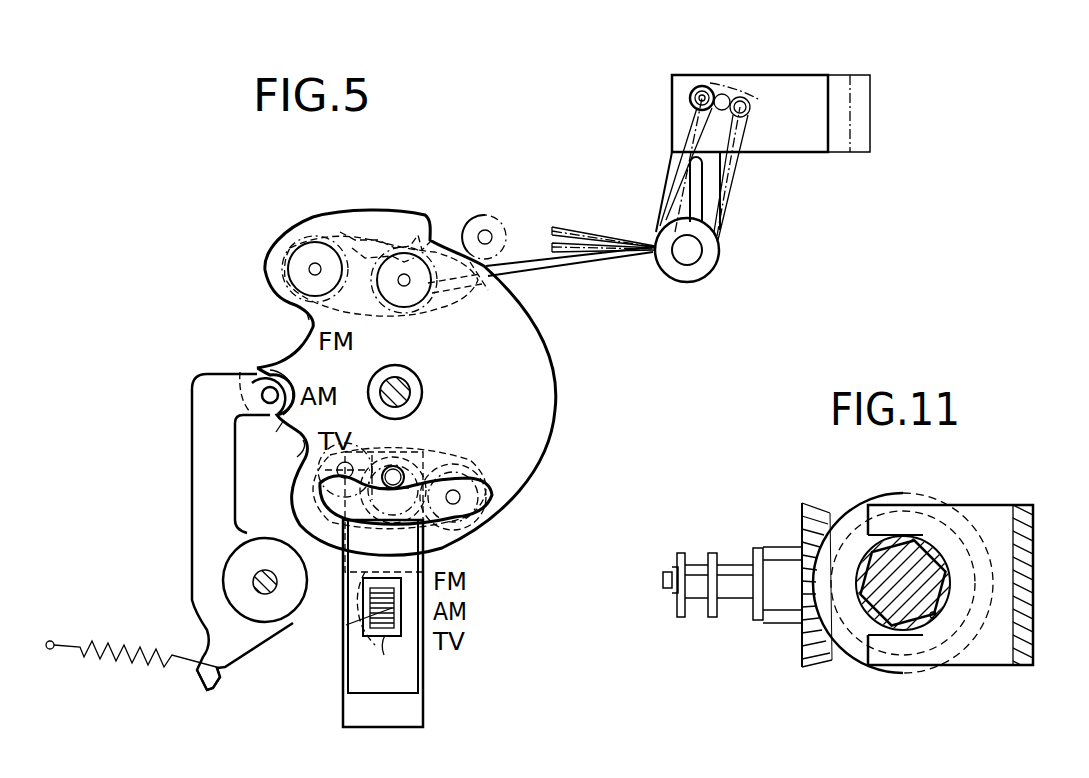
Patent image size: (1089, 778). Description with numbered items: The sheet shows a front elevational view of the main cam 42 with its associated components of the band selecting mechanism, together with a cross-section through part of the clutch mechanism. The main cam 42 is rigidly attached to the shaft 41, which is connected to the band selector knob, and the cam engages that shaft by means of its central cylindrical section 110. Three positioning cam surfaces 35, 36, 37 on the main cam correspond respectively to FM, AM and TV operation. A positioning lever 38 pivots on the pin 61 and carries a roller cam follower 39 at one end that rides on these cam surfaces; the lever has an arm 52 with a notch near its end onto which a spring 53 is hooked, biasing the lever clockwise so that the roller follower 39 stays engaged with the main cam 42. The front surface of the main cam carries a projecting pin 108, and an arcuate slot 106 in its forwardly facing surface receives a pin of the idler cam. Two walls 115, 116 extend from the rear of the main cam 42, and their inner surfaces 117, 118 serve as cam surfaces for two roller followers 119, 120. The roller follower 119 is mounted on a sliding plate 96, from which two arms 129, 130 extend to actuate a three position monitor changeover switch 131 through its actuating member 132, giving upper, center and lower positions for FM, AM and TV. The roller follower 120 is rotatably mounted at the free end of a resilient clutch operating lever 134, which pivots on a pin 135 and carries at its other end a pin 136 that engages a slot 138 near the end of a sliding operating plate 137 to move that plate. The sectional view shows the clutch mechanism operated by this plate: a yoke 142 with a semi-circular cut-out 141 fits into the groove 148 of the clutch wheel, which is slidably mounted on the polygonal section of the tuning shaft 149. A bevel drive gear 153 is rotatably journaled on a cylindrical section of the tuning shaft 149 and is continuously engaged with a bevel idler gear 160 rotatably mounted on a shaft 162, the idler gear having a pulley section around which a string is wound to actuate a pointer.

In FIG. 5, the positioning cam surface 35 is at (308, 327).
In FIG. 5, the positioning cam surface 36 is at (280, 418).
In FIG. 5, the positioning cam surface 37 is at (298, 450).
In FIG. 5, the positioning lever 38 is at (193, 486).
In FIG. 5, the roller cam follower 39 is at (240, 372).
In FIG. 5, the shaft 41 is at (408, 385).
In FIG. 5, the main cam 42 is at (562, 392).
In FIG. 5, the arm 52 is at (200, 680).
In FIG. 5, the spring 53 is at (108, 650).
In FIG. 5, the pin 61 is at (265, 572).
In FIG. 5, the sliding plate 96 is at (418, 668).
In FIG. 5, the arcuate slot 106 is at (452, 480).
In FIG. 5, the pin 108 is at (398, 470).
In FIG. 5, the central cylindrical section 110 is at (414, 392).
In FIG. 5, the wall 115 is at (455, 478).
In FIG. 5, the wall 116 is at (458, 292).
In FIG. 5, the inner surface 117 is at (486, 482).
In FIG. 5, the inner surface 118 is at (352, 240).
In FIG. 5, the roller follower 119 is at (494, 535).
In FIG. 5, the roller follower 120 is at (306, 242).
In FIG. 5, the arm 129 is at (422, 578).
In FIG. 5, the arm 130 is at (384, 632).
In FIG. 5, the monitor changeover switch 131 is at (412, 712).
In FIG. 5, the actuating member 132 is at (340, 625).
In FIG. 5, the clutch operating lever 134 is at (592, 268).
In FIG. 5, the pin 135 is at (700, 253).
In FIG. 5, the pin 136 is at (692, 93).
In FIG. 5, the sliding operating plate 137 is at (793, 140).
In FIG. 11, the sliding operating plate 137 is at (1026, 577).
In FIG. 5, the slot 138 is at (694, 104).
In FIG. 11, the semi-circular cut-out 141 is at (935, 620).
In FIG. 11, the yoke 142 is at (990, 655).
In FIG. 11, the groove 148 is at (868, 548).
In FIG. 11, the tuning shaft 149 is at (922, 548).
In FIG. 11, the bevel drive gear 153 is at (855, 650).
In FIG. 11, the bevel idler gear 160 is at (803, 655).
In FIG. 11, the shaft 162 is at (665, 580).